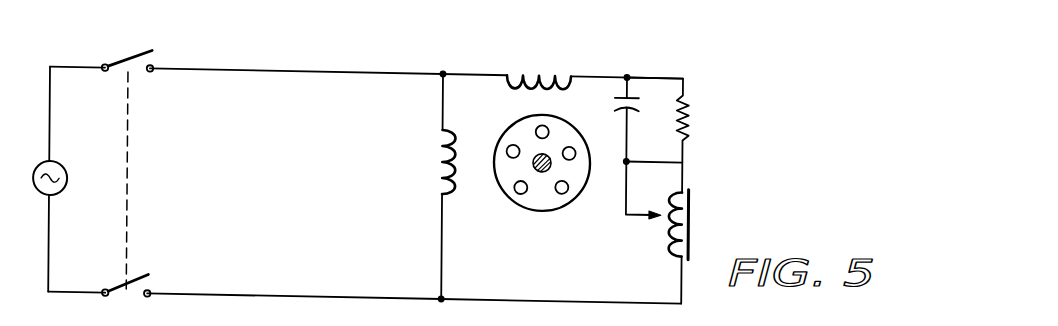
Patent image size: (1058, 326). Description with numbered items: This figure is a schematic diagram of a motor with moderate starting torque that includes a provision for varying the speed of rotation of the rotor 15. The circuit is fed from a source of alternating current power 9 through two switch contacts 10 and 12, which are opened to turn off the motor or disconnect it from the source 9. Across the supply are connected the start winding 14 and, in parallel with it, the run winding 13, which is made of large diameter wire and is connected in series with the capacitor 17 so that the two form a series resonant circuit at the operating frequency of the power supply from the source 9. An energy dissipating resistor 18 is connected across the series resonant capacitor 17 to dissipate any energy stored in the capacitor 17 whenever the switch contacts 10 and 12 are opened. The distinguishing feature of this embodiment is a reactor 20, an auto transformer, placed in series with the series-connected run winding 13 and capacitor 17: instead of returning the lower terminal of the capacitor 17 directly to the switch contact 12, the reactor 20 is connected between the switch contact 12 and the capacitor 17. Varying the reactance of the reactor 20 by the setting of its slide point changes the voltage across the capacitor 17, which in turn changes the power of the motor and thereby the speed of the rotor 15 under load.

The source of alternating current power 9 is at (52, 203).
The switch contact 10 is at (138, 61).
The switch contact 12 is at (128, 289).
The run winding 13 is at (562, 81).
The start winding 14 is at (448, 140).
The rotor 15 is at (516, 204).
The series resonant capacitor 17 is at (638, 89).
The energy dissipating resistor 18 is at (687, 97).
The reactor 20 is at (668, 243).